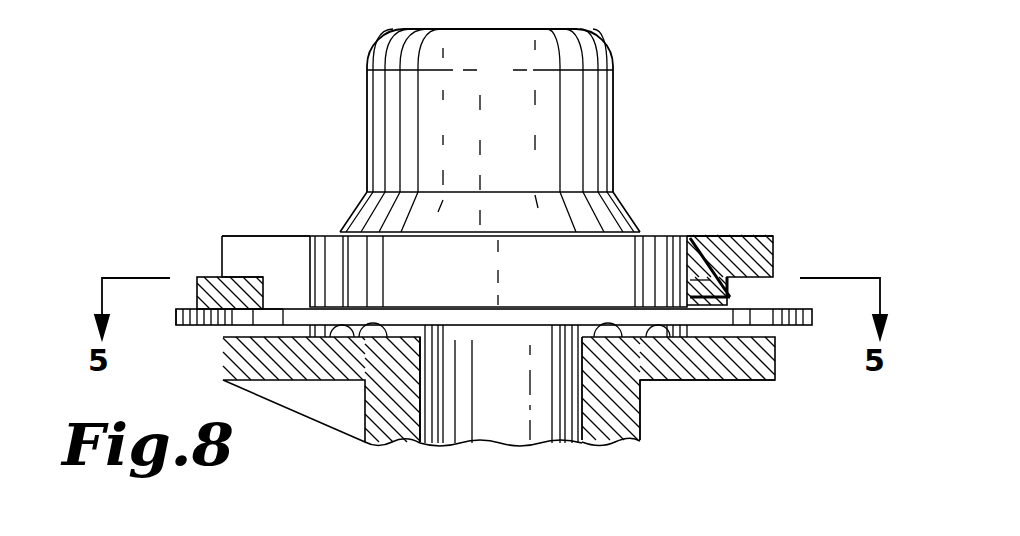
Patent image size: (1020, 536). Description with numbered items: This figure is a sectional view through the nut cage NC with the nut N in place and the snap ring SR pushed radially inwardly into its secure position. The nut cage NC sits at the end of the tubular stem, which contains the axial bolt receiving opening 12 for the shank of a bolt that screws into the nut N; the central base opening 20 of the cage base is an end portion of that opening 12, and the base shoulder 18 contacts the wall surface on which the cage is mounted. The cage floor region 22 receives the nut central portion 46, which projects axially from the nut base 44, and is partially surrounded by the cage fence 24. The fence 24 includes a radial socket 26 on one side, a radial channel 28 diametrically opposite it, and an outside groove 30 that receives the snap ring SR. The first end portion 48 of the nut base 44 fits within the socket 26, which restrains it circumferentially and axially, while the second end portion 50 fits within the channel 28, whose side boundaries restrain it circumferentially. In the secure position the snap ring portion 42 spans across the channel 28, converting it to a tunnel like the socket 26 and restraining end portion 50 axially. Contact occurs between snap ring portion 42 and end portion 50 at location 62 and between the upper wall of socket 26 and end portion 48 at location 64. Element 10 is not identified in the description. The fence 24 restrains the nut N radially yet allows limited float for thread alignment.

The housing 10 is at (627, 415).
The bolt receiving opening 12 is at (493, 415).
The base shoulder 18 is at (678, 380).
The central base opening 20 is at (443, 362).
The cage floor region 22 is at (352, 332).
The cage fence 24 is at (263, 236).
The radial socket 26 is at (717, 327).
The radial channel 28 is at (263, 257).
The outside groove 30 is at (260, 287).
The snap ring portion 42 is at (217, 293).
The nut base 44 is at (503, 320).
The nut central portion 46 is at (593, 157).
The first end portion 48 is at (793, 327).
The second end portion 50 is at (247, 320).
The contact location 62 is at (248, 300).
The contact location 64 is at (710, 293).
The nut N is at (562, 113).
The nut cage NC is at (745, 215).
The snap ring SR is at (262, 293).